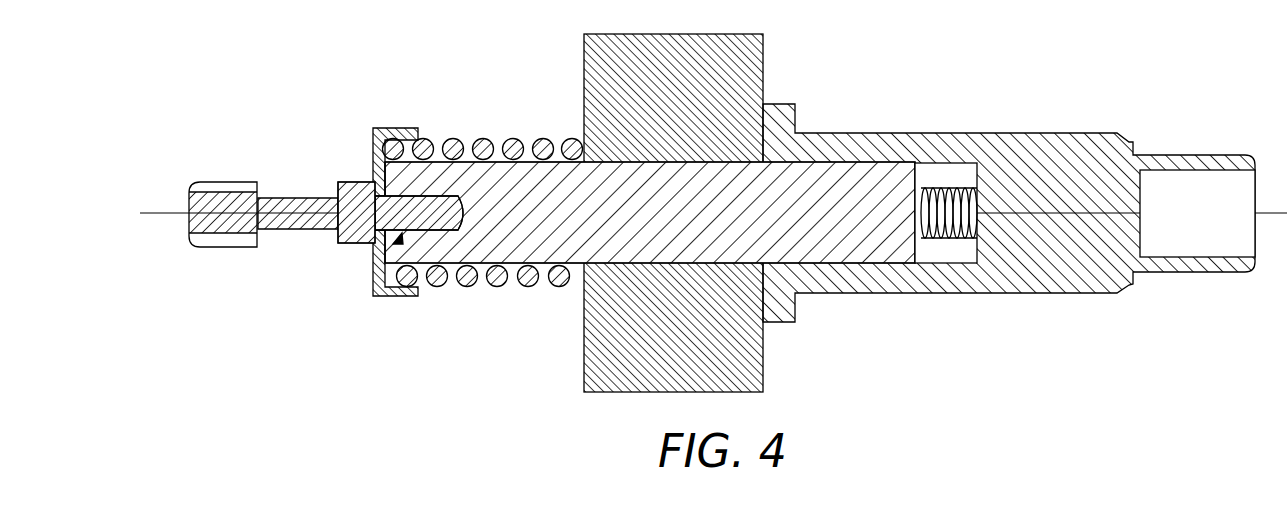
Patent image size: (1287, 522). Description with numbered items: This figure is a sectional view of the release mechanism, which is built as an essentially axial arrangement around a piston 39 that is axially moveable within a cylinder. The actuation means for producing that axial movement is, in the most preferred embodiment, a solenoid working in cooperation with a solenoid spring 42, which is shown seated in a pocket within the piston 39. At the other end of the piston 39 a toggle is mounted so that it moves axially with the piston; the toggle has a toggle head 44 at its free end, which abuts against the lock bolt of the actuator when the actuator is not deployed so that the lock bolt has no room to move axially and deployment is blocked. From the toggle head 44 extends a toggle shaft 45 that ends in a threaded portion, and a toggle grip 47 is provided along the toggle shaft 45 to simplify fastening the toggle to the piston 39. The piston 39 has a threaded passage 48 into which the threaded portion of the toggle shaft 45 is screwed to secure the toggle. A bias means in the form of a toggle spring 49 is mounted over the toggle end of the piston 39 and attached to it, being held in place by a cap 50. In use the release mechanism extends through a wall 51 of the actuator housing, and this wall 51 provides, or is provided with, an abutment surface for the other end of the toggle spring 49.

The piston 39 is at (851, 253).
The solenoid spring 42 is at (953, 244).
The toggle head 44 is at (228, 200).
The toggle shaft 45 is at (290, 229).
The toggle grip 47 is at (350, 182).
The threaded passage 48 is at (396, 239).
The toggle spring 49 is at (508, 288).
The cap 50 is at (378, 128).
The wall 51 is at (584, 52).